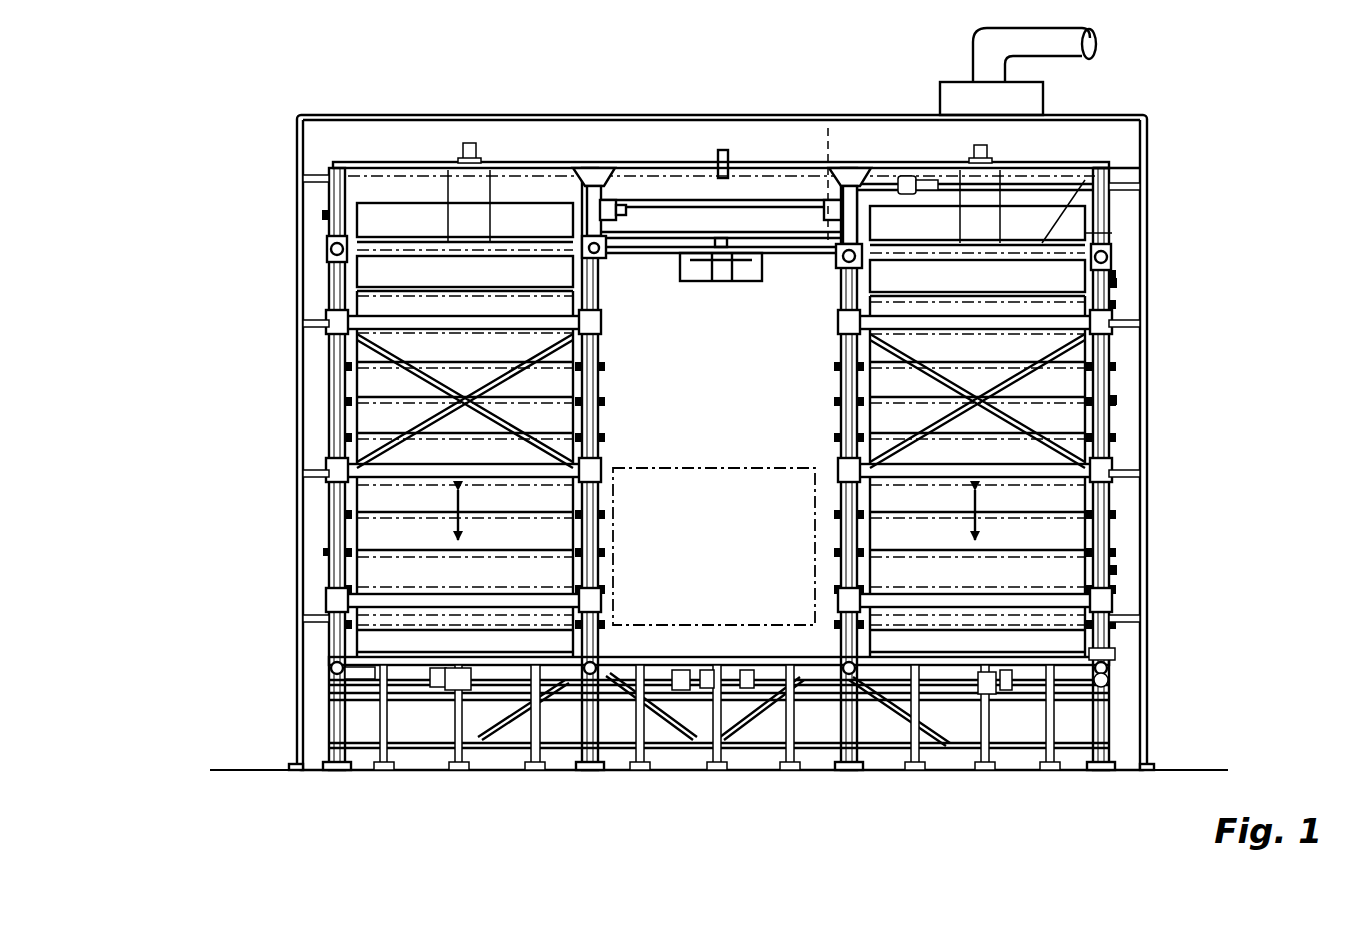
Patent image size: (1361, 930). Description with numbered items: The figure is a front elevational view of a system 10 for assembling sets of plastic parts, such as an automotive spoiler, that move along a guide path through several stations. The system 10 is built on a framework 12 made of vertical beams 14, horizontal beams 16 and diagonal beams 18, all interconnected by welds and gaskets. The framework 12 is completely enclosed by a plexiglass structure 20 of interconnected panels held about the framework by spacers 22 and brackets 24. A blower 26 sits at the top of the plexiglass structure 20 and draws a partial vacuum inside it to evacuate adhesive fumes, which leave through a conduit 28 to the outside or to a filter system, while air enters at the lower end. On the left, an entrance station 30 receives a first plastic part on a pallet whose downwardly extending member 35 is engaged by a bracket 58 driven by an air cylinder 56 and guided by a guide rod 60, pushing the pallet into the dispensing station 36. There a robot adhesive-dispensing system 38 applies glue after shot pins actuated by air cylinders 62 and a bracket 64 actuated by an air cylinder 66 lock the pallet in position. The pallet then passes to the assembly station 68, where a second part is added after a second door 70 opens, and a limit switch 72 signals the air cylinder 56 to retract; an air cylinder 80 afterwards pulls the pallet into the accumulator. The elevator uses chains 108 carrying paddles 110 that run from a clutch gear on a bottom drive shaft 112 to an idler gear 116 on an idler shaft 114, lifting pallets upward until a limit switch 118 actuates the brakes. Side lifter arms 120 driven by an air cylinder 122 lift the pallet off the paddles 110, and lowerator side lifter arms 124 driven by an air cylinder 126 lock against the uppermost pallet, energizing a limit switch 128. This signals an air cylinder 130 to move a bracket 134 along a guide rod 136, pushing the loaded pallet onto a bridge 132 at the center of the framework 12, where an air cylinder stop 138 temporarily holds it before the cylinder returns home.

The system 10 is at (1257, 333).
The framework 12 is at (360, 152).
The vertical beams 14 is at (702, 504).
The horizontal beams 16 is at (719, 457).
The diagonal beams 18 is at (721, 481).
The plexiglass structure 20 is at (425, 113).
The spacers 22 is at (715, 344).
The brackets 24 is at (706, 446).
The blower 26 is at (1045, 101).
The conduit 28 is at (1085, 52).
The entrance station 30 is at (318, 655).
The downwardly extending member 35 is at (328, 554).
The dispensing station 36 is at (670, 690).
The robot adhesive-dispensing system 38 is at (1118, 570).
The air cylinder 56 is at (385, 720).
The bracket 58 is at (347, 707).
The guide rod 60 is at (438, 690).
The air cylinders 62 is at (644, 744).
The bracket 64 is at (775, 700).
The air cylinder 66 is at (740, 700).
The assembly station 68 is at (1008, 720).
The second door 70 is at (1118, 505).
The limit switch 72 is at (1104, 657).
The air cylinder 80 is at (986, 700).
The chains 108 is at (1006, 404).
The paddles 110 is at (1007, 318).
The bottom drive shaft 112 is at (1108, 682).
The idler shaft 114 is at (1026, 169).
The idler gear 116 is at (828, 128).
The limit switch 118 is at (1116, 236).
The side lifter arms 120 is at (1112, 168).
The air cylinder 122 is at (1085, 180).
The lowerator side lifter arms 124 is at (507, 238).
The air cylinder 126 is at (475, 145).
The limit switch 128 is at (325, 215).
The air cylinder 130 is at (1125, 163).
The bridge 132 is at (760, 240).
The bracket 134 is at (1110, 215).
The guide rod 136 is at (905, 178).
The air cylinder stop 138 is at (610, 200).